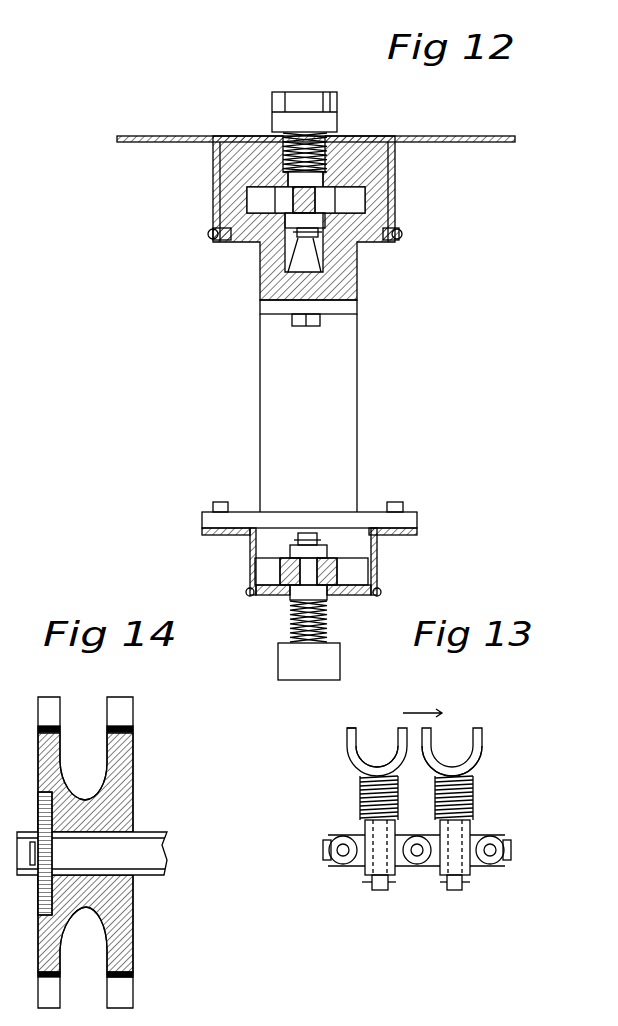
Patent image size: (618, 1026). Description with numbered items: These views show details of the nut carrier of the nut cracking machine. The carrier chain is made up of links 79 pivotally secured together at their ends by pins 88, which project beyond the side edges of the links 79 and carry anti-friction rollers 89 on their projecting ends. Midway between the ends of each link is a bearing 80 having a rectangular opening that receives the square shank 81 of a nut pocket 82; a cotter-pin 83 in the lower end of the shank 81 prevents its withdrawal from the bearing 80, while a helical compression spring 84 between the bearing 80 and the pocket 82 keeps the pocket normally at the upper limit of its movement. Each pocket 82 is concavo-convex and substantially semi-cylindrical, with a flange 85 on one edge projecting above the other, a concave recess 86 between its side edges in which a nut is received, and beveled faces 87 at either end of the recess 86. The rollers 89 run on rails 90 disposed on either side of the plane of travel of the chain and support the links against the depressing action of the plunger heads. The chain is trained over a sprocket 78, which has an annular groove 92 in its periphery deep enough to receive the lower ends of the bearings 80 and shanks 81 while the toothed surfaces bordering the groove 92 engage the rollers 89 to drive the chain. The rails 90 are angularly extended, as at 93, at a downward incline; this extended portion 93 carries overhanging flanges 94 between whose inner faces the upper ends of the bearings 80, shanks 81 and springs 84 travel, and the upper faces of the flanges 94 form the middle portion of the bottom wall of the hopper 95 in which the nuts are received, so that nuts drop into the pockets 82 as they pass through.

In FIG. 14, the sprocket 78 is at (125, 800).
In FIG. 13, the links 79 is at (483, 841).
In FIG. 12, the bearing 80 is at (285, 177).
In FIG. 13, the bearing 80 is at (470, 818).
In FIG. 12, the square shank 81 is at (292, 240).
In FIG. 13, the square shank 81 is at (455, 888).
In FIG. 12, the pocket 82 is at (327, 100).
In FIG. 13, the pocket 82 is at (483, 754).
In FIG. 12, the cotter-pin 83 is at (321, 246).
In FIG. 13, the cotter-pin 83 is at (470, 883).
In FIG. 12, the helical compression spring 84 is at (292, 155).
In FIG. 13, the helical compression spring 84 is at (368, 806).
In FIG. 12, the flange 85 is at (306, 110).
In FIG. 13, the flange 85 is at (470, 746).
In FIG. 13, the concave recesses 86 is at (381, 760).
In FIG. 13, the beveled faces 87 is at (365, 768).
In FIG. 13, the pins 88 is at (511, 845).
In FIG. 12, the anti-friction rollers 89 is at (355, 202).
In FIG. 13, the anti-friction rollers 89 is at (330, 858).
In FIG. 12, the rails 90 is at (335, 258).
In FIG. 14, the annular groove 92 is at (95, 985).
In FIG. 12, the extended portion 93 is at (377, 208).
In FIG. 12, the overhanging flanges 94 is at (337, 143).
In FIG. 12, the hopper 95 is at (513, 135).